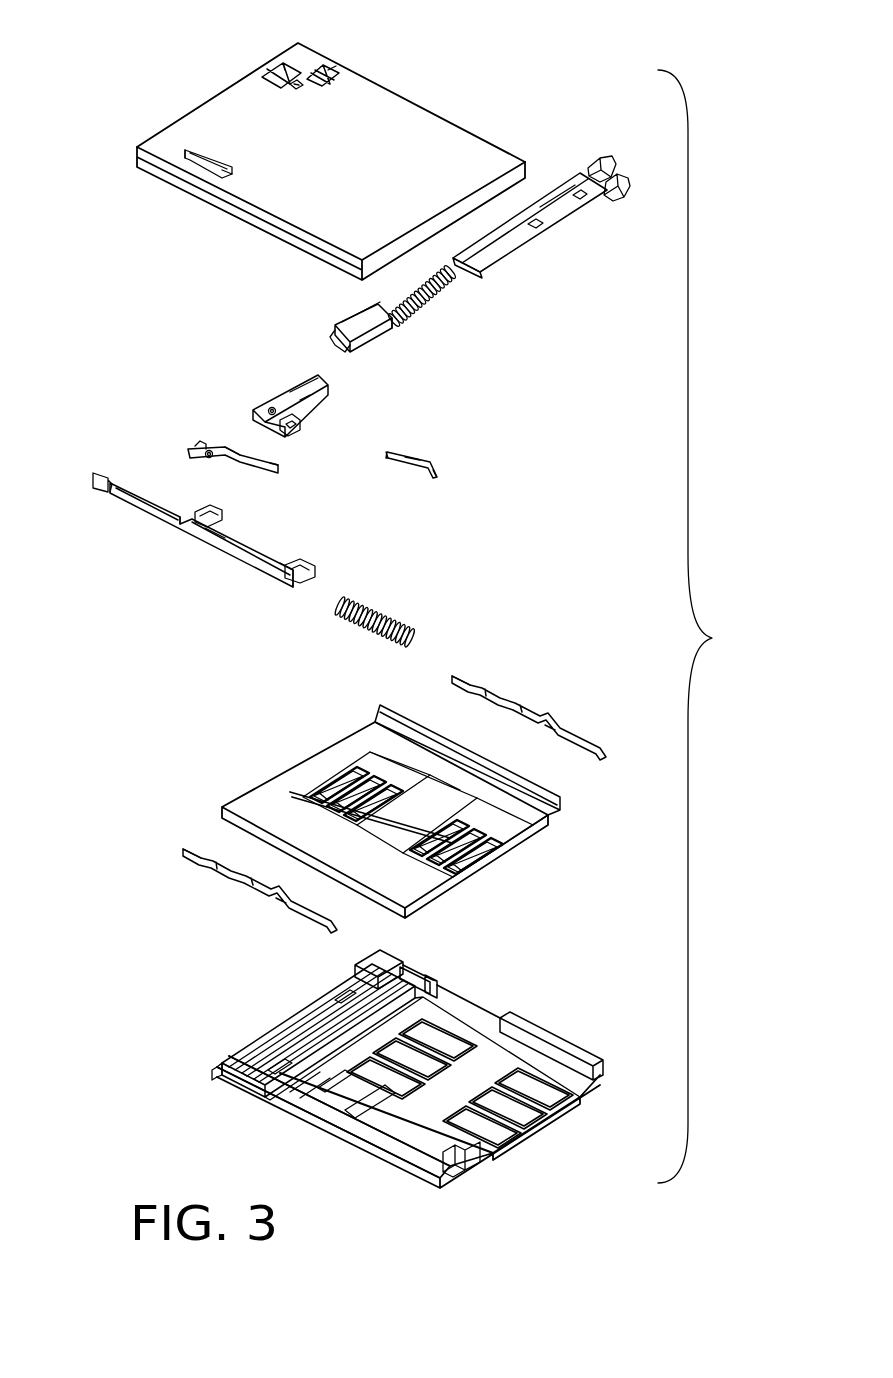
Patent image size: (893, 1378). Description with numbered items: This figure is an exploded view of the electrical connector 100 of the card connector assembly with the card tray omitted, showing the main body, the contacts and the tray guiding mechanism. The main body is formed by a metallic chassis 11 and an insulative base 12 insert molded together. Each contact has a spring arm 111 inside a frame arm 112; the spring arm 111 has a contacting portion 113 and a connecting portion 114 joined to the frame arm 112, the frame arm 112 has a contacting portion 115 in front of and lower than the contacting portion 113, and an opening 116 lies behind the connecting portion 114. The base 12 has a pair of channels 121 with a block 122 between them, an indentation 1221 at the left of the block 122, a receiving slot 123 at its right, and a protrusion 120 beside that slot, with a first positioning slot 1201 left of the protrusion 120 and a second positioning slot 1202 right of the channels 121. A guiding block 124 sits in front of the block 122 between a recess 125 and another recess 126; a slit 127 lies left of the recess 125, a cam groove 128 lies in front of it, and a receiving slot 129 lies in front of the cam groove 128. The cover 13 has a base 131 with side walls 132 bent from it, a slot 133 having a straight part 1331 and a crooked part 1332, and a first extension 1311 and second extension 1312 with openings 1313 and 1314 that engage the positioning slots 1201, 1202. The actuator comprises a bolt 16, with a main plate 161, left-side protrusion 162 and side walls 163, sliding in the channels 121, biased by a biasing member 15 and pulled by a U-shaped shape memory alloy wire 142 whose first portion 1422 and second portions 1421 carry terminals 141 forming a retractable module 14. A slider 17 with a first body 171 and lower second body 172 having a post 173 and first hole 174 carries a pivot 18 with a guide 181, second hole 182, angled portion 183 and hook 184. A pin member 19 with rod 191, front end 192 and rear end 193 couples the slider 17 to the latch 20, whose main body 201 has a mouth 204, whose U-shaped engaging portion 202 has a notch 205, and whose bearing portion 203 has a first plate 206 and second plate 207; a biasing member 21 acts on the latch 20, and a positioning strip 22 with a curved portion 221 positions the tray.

The electrical connector 100 is at (712, 638).
The metallic chassis 11 is at (434, 791).
The spring arm 111 is at (380, 745).
The frame arm 112 is at (410, 757).
The contacting portion 113 is at (490, 800).
The connecting portion 114 is at (562, 798).
The contacting portion 115 is at (467, 805).
The opening 116 is at (520, 837).
The insulative base 12 is at (364, 1062).
The protrusion 120 is at (395, 950).
The first positioning slot 1201 is at (378, 965).
The second positioning slot 1202 is at (405, 968).
The channels 121 is at (235, 1053).
The block 122 is at (265, 1040).
The receiving slot 123 is at (320, 1007).
The indentation 1221 is at (230, 1077).
The guiding block 124 is at (310, 1047).
The recess 125 is at (277, 1068).
The recess 126 is at (330, 1070).
The slit 127 is at (382, 1137).
The cam groove 128 is at (363, 1127).
The receiving slot 129 is at (443, 1152).
The cover 13 is at (295, 161).
The base 131 is at (390, 140).
The first spring tab 1311 is at (283, 68).
The second spring tab 1312 is at (318, 72).
The first opening 1313 is at (265, 76).
The second opening 1314 is at (335, 72).
The side walls 132 is at (290, 237).
The slot 133 is at (148, 216).
The straight part 1331 is at (185, 155).
The crooked part 1332 is at (230, 176).
The retractable module 14 is at (558, 201).
The terminals 141 is at (620, 170).
The shape memory alloy wire 142 is at (538, 206).
The second portions 1421 is at (530, 240).
The first portion 1422 is at (463, 272).
The biasing member 15 is at (425, 300).
The bolt 16 is at (374, 350).
The main plate 161 is at (355, 316).
The left-side protrusion 162 is at (350, 330).
The side walls 163 is at (390, 340).
The slider 17 is at (290, 384).
The first body 171 is at (297, 388).
The second body 172 is at (268, 408).
The post 173 is at (281, 430).
The first hole 174 is at (307, 403).
The pivot 18 is at (238, 449).
The guide 181 is at (198, 443).
The second hole 182 is at (203, 457).
The angled portion 183 is at (226, 448).
The hook 184 is at (279, 463).
The pin member 19 is at (460, 473).
The rod 191 is at (420, 455).
The front end 192 is at (440, 475).
The rear end 193 is at (388, 460).
The latch 20 is at (229, 566).
The main body 201 is at (215, 548).
The engaging portion 202 is at (182, 525).
The bearing portion 203 is at (312, 566).
The mouth 204 is at (112, 494).
The notch 205 is at (220, 528).
The first plate 206 is at (290, 577).
The second plate 207 is at (322, 580).
The biasing member 21 is at (390, 615).
The positioning strip 22 is at (382, 768).
The curved portion 221 is at (485, 690).